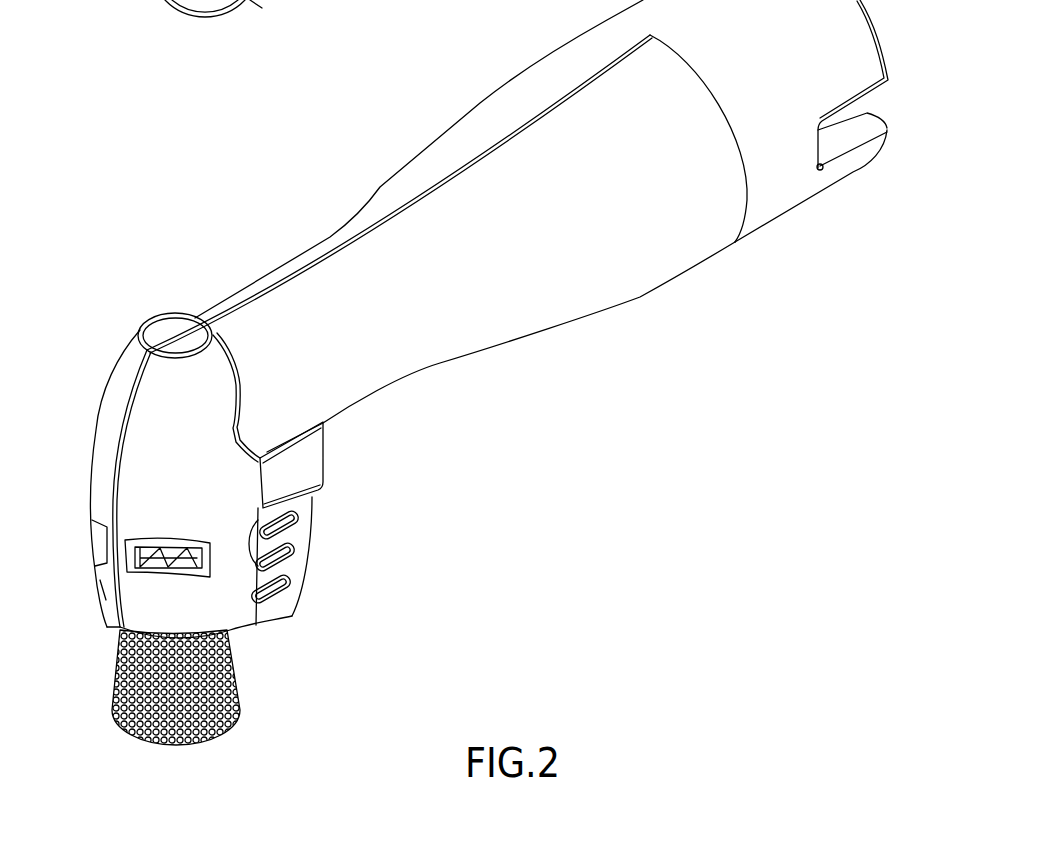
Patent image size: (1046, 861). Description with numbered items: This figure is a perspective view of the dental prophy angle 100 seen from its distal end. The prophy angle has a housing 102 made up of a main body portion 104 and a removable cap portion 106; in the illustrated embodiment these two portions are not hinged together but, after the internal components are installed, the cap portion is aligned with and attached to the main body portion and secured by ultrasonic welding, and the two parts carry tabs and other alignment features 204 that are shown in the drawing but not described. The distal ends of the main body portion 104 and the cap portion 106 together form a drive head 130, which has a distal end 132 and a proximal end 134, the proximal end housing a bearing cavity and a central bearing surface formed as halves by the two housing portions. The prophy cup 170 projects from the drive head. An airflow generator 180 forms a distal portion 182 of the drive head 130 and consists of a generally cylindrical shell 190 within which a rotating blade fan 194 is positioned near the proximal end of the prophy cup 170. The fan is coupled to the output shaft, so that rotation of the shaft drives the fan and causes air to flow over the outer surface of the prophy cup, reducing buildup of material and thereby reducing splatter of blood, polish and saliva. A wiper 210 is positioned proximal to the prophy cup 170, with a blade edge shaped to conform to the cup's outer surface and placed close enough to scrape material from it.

The dental prophy angle 100 is at (244, 208).
The housing 102 is at (483, 105).
The main body portion 104 is at (773, 200).
The removable cap portion 106 is at (603, 290).
The drive head 130 is at (103, 400).
The distal end 132 is at (107, 620).
The proximal end 134 is at (163, 328).
The prophy cup 170 is at (240, 683).
The airflow generator 180 is at (97, 560).
The distal portion 182 is at (108, 594).
The generally cylindrical shell 190 is at (220, 607).
The rotating blade fan 194 is at (163, 557).
The seam 204 is at (95, 520).
The wiper 210 is at (308, 522).